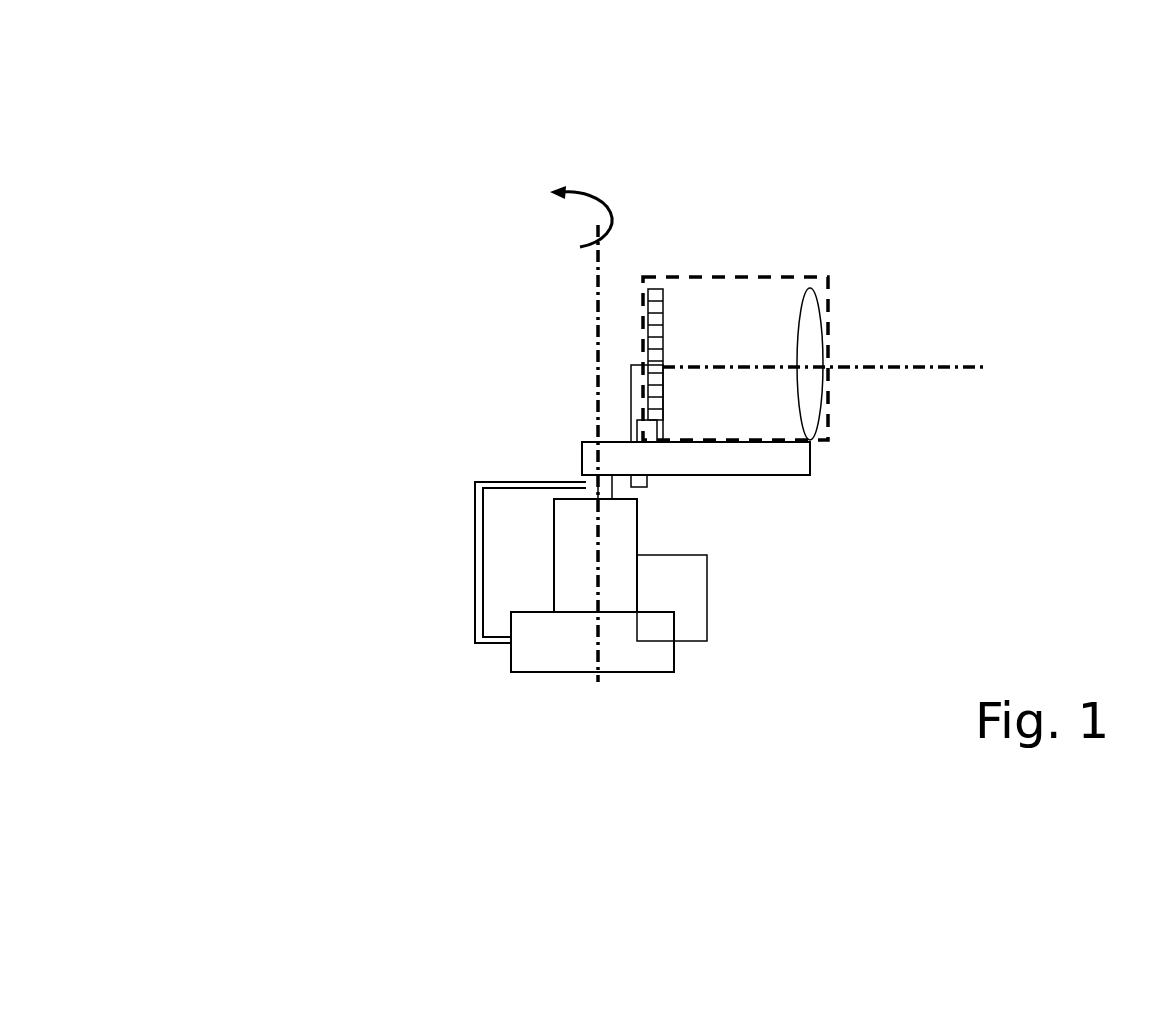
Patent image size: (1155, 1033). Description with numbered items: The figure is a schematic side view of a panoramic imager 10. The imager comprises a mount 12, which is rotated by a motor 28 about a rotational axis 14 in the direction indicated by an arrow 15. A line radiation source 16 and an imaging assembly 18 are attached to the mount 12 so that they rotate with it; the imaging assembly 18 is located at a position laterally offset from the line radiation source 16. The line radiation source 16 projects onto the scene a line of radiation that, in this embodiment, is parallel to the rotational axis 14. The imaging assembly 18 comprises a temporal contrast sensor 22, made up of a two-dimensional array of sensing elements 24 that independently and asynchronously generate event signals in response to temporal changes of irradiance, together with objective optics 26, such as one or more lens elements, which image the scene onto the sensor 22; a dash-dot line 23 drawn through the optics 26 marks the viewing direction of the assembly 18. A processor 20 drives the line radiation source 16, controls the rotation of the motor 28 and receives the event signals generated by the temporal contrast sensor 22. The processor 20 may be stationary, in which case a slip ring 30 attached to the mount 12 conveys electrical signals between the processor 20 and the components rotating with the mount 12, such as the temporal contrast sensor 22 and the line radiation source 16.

The panoramic imager 10 is at (228, 111).
The mount 12 is at (663, 460).
The rotational axis 14 is at (592, 293).
The arrow 15 is at (572, 188).
The line radiation source 16 is at (655, 441).
The imaging assembly 18 is at (829, 295).
The processor 20 is at (545, 652).
The temporal contrast sensor 22 is at (658, 290).
The optical axis 23 is at (934, 365).
The sensing elements 24 is at (664, 340).
The objective optics 26 is at (810, 287).
The motor 28 is at (612, 573).
The slip ring 30 is at (590, 487).